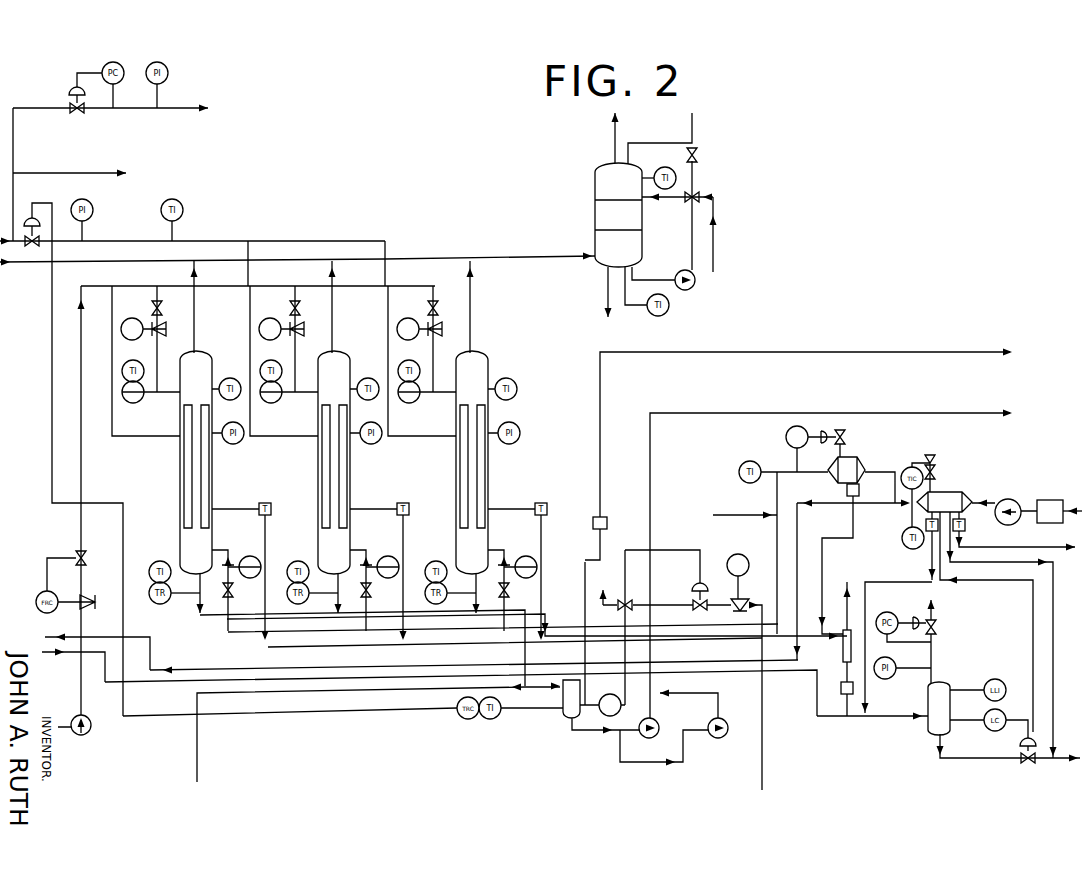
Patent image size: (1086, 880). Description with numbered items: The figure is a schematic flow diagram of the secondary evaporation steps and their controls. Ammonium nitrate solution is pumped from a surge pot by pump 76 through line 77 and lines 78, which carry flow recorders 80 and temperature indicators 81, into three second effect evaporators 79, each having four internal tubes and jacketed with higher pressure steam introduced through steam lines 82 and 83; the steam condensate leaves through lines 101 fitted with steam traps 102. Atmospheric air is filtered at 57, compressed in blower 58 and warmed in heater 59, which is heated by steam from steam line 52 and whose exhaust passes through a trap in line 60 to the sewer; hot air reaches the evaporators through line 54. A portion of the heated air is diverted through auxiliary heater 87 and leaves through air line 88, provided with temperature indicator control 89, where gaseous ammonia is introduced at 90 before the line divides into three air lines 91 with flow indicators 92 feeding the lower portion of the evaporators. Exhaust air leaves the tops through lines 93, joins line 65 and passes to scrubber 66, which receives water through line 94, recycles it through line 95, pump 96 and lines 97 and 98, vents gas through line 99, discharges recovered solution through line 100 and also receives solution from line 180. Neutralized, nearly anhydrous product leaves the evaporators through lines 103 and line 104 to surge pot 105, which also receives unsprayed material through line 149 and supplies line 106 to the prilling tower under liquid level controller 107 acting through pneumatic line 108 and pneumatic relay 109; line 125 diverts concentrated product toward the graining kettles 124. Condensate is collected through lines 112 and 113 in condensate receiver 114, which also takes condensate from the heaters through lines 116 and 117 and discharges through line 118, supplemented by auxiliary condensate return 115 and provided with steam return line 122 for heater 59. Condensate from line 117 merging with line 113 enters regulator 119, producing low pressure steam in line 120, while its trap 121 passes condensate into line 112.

The steam line 52 is at (933, 475).
The hot air line 54 is at (42, 636).
The air filter 57 is at (1063, 494).
The blower 58 is at (1018, 496).
The heater 59 is at (956, 488).
The steam exhaust line 60 is at (992, 545).
The air exit line 65 is at (22, 281).
The scrubber 66 is at (596, 181).
The pump 76 is at (79, 740).
The line 77 is at (82, 470).
The lines 78 is at (158, 358).
The second effect evaporators 79 is at (205, 362).
The flow recorders 80 is at (281, 329).
The temperature indicators 81 is at (289, 381).
The steam line 82 is at (299, 239).
The steam line 83 is at (112, 305).
The auxiliary heater 87 is at (847, 454).
The air line 88 is at (573, 621).
The temperature indicator control 89 is at (815, 449).
The ammonia introduction point 90 is at (743, 513).
The air lines 91 is at (233, 603).
The flow indicators 92 is at (382, 567).
The air exhaust lines 93 is at (194, 312).
The water line 94 is at (672, 141).
The recycle line 95 is at (641, 279).
The pump 96 is at (691, 288).
The recycle line 97 is at (693, 254).
The recycle line 98 is at (660, 210).
The gaseous effluent line 99 is at (615, 137).
The recovered solution line 100 is at (608, 296).
The condensate line 101 is at (249, 505).
The steam trap 102 is at (264, 501).
The lines 103 is at (312, 582).
The line 104 is at (525, 612).
The surge pot 105 is at (562, 722).
The line 106 is at (687, 407).
The liquid level controller 107 is at (602, 705).
The pneumatic line 108 is at (912, 338).
The pneumatic relay 109 is at (607, 522).
The condensate line 112 is at (727, 675).
The condensate line 113 is at (715, 643).
The condensate receiver 114 is at (940, 686).
The auxiliary condensate return 115 is at (1052, 611).
The condensate line 116 is at (925, 567).
The condensate line 117 is at (822, 576).
The disposal line 118 is at (1040, 767).
The regulator 119 is at (843, 657).
The low pressure steam line 120 is at (847, 582).
The trap 121 is at (844, 709).
The steam return line 122 is at (1026, 628).
The graining kettles 124 is at (738, 576).
The line 125 is at (677, 603).
The return line 149 is at (197, 774).
The line 180 is at (714, 253).